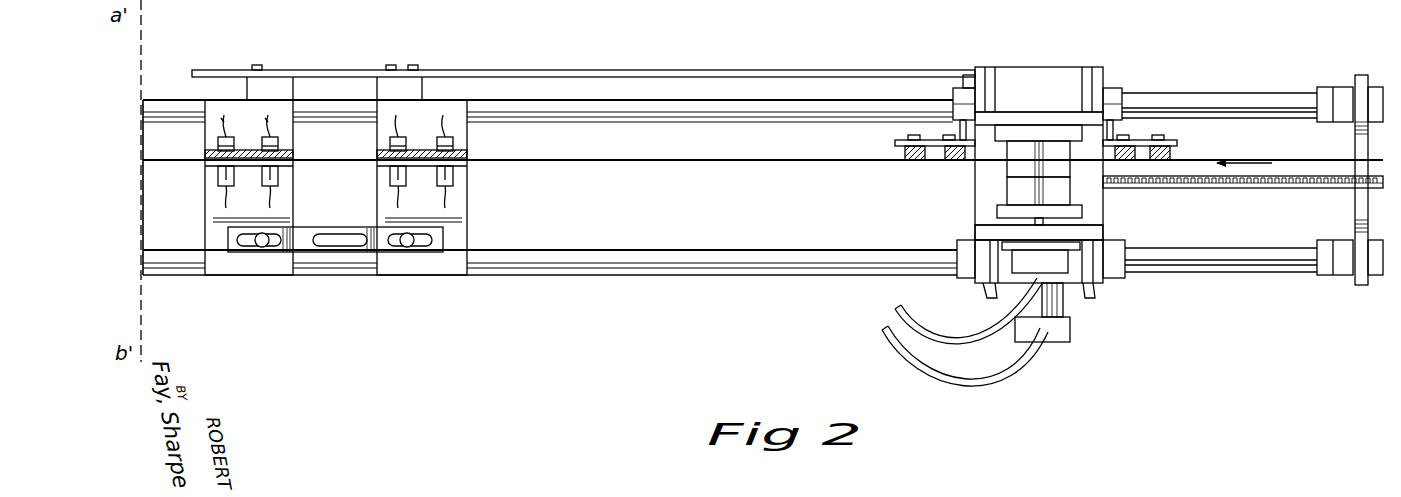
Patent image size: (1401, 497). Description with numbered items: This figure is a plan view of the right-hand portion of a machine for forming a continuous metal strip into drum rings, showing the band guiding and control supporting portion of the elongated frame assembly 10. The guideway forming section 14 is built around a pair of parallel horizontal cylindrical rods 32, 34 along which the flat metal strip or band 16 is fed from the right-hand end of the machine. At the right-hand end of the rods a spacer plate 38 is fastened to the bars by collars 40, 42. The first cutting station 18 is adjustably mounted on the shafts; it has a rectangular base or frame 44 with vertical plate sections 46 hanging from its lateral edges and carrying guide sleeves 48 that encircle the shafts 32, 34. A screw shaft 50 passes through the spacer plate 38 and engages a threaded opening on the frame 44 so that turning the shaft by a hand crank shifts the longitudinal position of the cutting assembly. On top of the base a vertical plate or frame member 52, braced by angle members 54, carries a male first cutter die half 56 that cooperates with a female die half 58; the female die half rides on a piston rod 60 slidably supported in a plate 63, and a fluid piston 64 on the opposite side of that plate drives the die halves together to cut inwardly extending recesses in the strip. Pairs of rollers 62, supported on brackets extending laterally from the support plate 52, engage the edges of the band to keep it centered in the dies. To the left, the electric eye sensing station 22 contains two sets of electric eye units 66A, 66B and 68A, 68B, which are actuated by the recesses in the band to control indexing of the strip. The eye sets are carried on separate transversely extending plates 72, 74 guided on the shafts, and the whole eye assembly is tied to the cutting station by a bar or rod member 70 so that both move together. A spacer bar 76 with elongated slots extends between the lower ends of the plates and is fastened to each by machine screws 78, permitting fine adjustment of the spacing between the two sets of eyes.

The frame assembly 10 is at (307, 32).
The guideway forming section 14 is at (661, 288).
The strip or band 16 is at (675, 161).
The first cutting station 18 is at (1119, 46).
The electric eye sensing station 22 is at (499, 65).
The cylindrical rod 32 is at (731, 250).
The cylindrical rod 34 is at (724, 120).
The spacer plate 38 is at (1360, 232).
The collar 40 is at (1345, 87).
The collar 42 is at (1373, 78).
The rectangular base or frame 44 is at (1041, 57).
The vertical plate sections 46 is at (992, 295).
The guide sleeves 48 is at (956, 84).
The screw shaft 50 is at (1243, 195).
The vertical plate or frame member 52 is at (1108, 118).
The angle members 54 is at (1078, 104).
The first cutter die half 56 is at (1008, 165).
The female die half 58 is at (1007, 195).
The piston rod 60 is at (1041, 212).
The rollers 62 is at (910, 161).
The plate 63 is at (1103, 222).
The fluid piston 64 is at (900, 140).
The electric eye unit 66A is at (455, 178).
The electric eye unit 66B is at (392, 178).
The electric eye unit 68A is at (265, 190).
The electric eye unit 68B is at (218, 182).
The bar or rod member 70 is at (679, 70).
The transversely extending plate 72 is at (407, 278).
The transversely extending plate 74 is at (232, 278).
The spacer bar 76 is at (330, 253).
The machine screws 78 is at (404, 232).